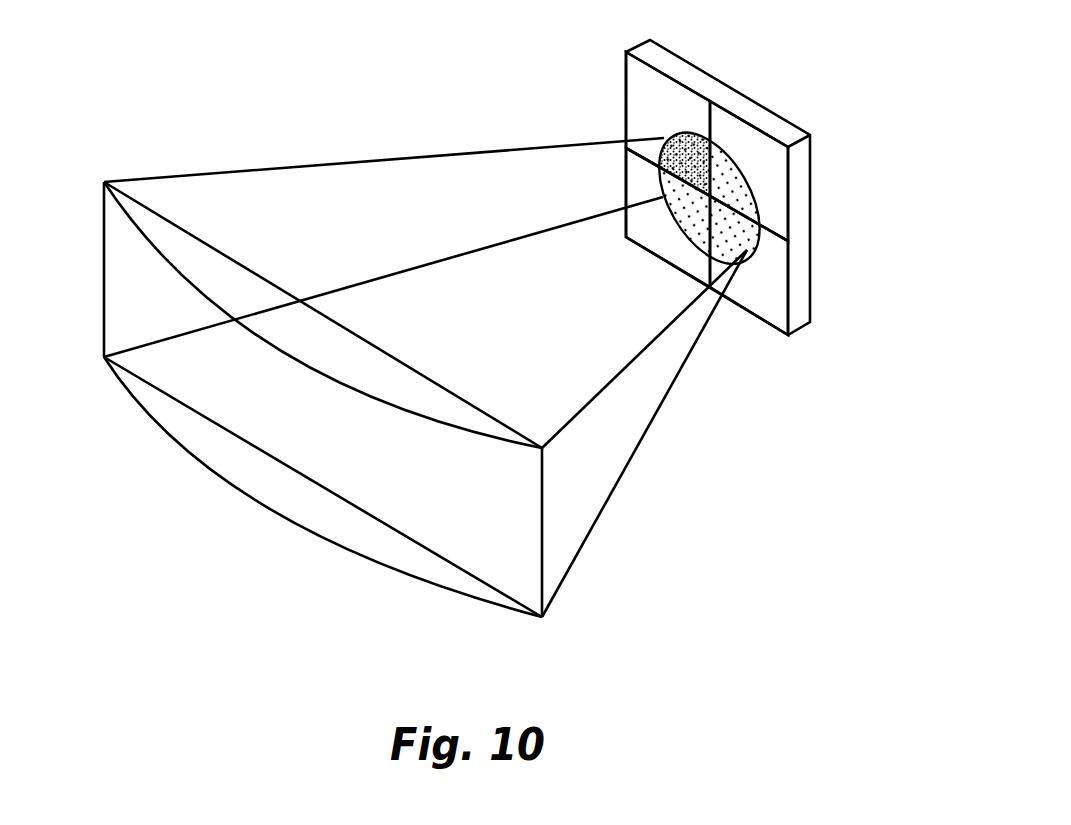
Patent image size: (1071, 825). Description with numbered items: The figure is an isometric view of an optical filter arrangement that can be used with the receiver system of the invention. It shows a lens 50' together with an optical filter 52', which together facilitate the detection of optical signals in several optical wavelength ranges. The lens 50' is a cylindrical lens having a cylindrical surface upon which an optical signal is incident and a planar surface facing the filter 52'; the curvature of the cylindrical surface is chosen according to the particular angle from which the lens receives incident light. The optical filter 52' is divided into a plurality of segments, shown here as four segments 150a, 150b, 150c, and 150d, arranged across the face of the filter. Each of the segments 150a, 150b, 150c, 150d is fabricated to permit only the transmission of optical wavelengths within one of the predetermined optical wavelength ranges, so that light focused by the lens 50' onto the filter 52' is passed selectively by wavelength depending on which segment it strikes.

The lens 50' is at (410, 334).
The optical filter 52' is at (761, 187).
The segment 150a is at (668, 97).
The segment 150b is at (782, 186).
The segment 150c is at (777, 286).
The segment 150d is at (635, 185).